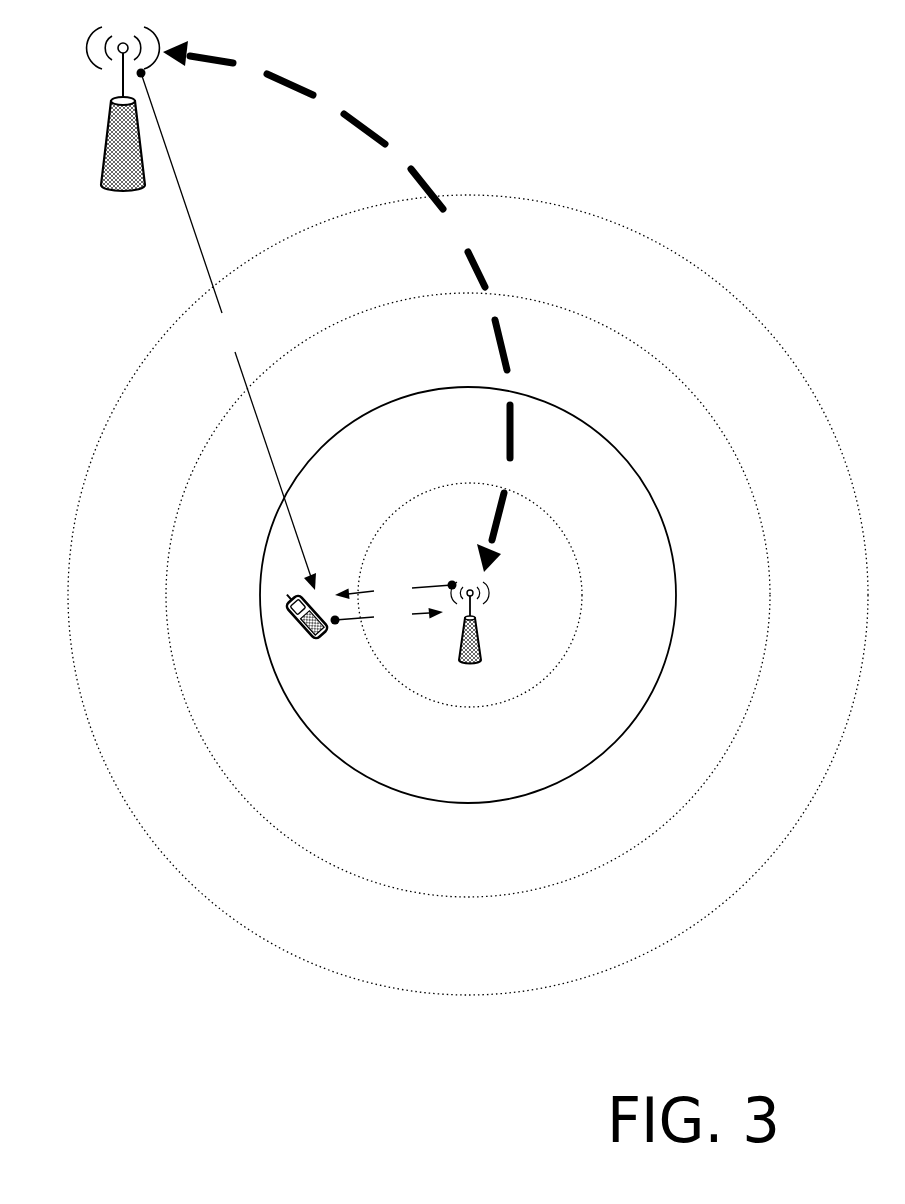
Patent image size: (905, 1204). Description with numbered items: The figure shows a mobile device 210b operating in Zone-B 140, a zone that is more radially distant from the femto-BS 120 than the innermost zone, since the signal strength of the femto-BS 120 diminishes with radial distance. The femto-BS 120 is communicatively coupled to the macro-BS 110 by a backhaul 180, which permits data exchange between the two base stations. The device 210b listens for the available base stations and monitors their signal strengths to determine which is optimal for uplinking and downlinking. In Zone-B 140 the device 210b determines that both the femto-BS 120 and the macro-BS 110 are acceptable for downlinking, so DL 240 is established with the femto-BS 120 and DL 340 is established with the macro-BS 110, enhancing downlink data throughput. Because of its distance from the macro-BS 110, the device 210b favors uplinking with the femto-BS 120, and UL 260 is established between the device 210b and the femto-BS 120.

The macro-BS 110 is at (117, 48).
The femto-BS 120 is at (478, 596).
The Zone-B 140 is at (605, 470).
The backhaul 180 is at (336, 306).
The mobile device 210b is at (313, 633).
The DL 240 is at (411, 601).
The UL 260 is at (411, 623).
The DL 340 is at (227, 330).